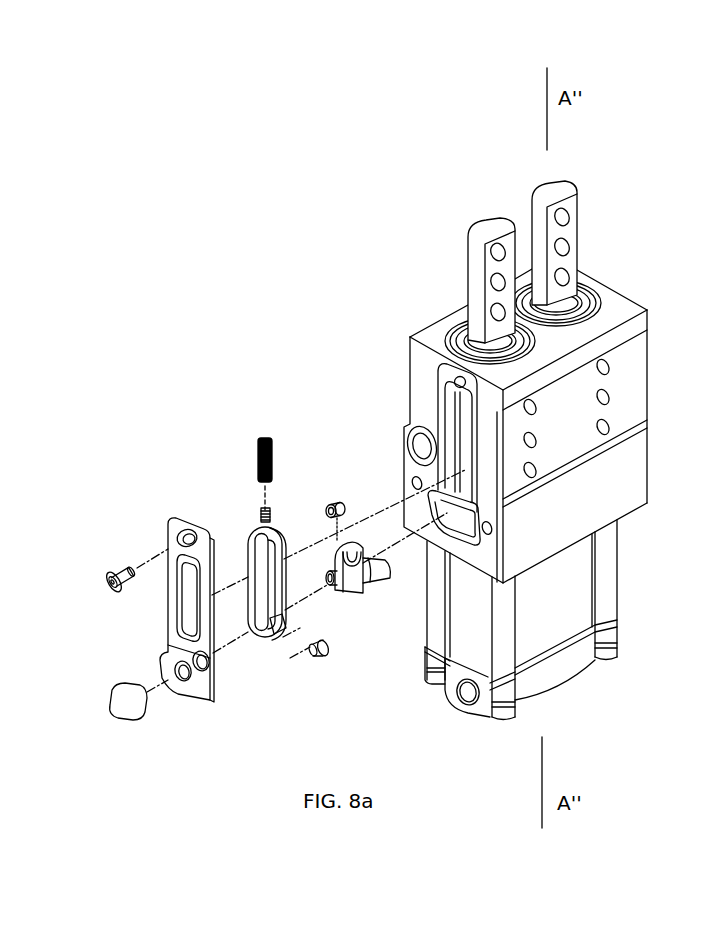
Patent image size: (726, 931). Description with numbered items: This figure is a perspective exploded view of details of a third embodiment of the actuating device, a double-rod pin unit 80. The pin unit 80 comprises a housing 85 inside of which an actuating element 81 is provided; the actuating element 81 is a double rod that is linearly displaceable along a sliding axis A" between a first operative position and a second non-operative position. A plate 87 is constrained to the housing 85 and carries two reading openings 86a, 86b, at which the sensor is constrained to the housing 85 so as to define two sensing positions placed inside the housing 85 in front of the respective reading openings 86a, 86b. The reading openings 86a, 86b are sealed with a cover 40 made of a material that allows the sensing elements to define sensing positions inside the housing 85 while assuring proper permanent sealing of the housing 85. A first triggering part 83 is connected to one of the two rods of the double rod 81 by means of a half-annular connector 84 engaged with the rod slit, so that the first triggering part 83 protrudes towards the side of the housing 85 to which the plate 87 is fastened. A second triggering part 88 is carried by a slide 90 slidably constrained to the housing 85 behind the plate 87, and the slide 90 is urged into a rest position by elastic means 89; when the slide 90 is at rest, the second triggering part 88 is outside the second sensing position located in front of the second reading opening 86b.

The cover 40 is at (125, 692).
The double-rod pin unit 80 is at (393, 290).
The actuating element 81 is at (548, 187).
The first triggering part 83 is at (333, 503).
The half-annular connector 84 is at (379, 578).
The housing 85 is at (620, 473).
The reading opening 86a is at (185, 678).
The reading opening 86b is at (207, 662).
The plate 87 is at (168, 547).
The second triggering part 88 is at (307, 650).
The elastic means 89 is at (260, 455).
The slide 90 is at (247, 548).